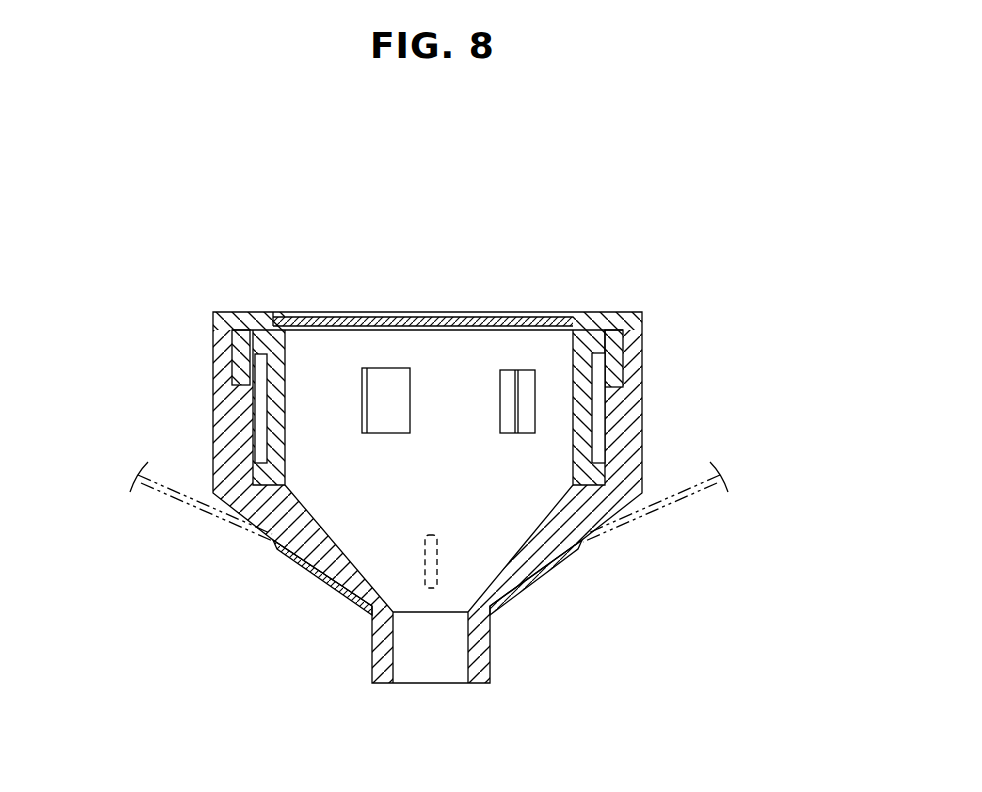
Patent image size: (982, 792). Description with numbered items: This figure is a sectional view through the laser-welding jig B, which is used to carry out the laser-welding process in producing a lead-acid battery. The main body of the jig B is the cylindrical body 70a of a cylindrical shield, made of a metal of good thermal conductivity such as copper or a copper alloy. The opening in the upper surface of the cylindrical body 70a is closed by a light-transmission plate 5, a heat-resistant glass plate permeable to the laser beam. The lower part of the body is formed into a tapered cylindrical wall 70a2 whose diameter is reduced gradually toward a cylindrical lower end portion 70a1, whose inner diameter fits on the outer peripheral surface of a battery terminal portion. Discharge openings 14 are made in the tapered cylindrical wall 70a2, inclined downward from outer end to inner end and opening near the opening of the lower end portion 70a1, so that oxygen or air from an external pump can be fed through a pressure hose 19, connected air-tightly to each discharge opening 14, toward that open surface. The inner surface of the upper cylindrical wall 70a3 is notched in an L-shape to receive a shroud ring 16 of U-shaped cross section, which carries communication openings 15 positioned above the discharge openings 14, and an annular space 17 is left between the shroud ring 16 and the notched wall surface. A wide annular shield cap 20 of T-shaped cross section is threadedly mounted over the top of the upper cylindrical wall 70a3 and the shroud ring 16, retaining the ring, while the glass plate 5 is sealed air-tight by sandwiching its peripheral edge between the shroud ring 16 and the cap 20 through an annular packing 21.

The light-transmission plate 5 is at (447, 314).
The discharge opening 14 is at (307, 567).
The communication opening 15 is at (388, 392).
The shroud ring 16 is at (249, 409).
The annular space 17 is at (613, 397).
The pressure hose 19 is at (150, 490).
The annular shield cap 20 is at (233, 314).
The annular packing 21 is at (270, 328).
The cylindrical body 70a is at (652, 440).
The cylindrical lower end portion 70a1 is at (491, 664).
The tapered cylindrical wall 70a2 is at (267, 543).
The upper cylindrical wall 70a3 is at (213, 455).
The laser-welding jig B is at (657, 345).